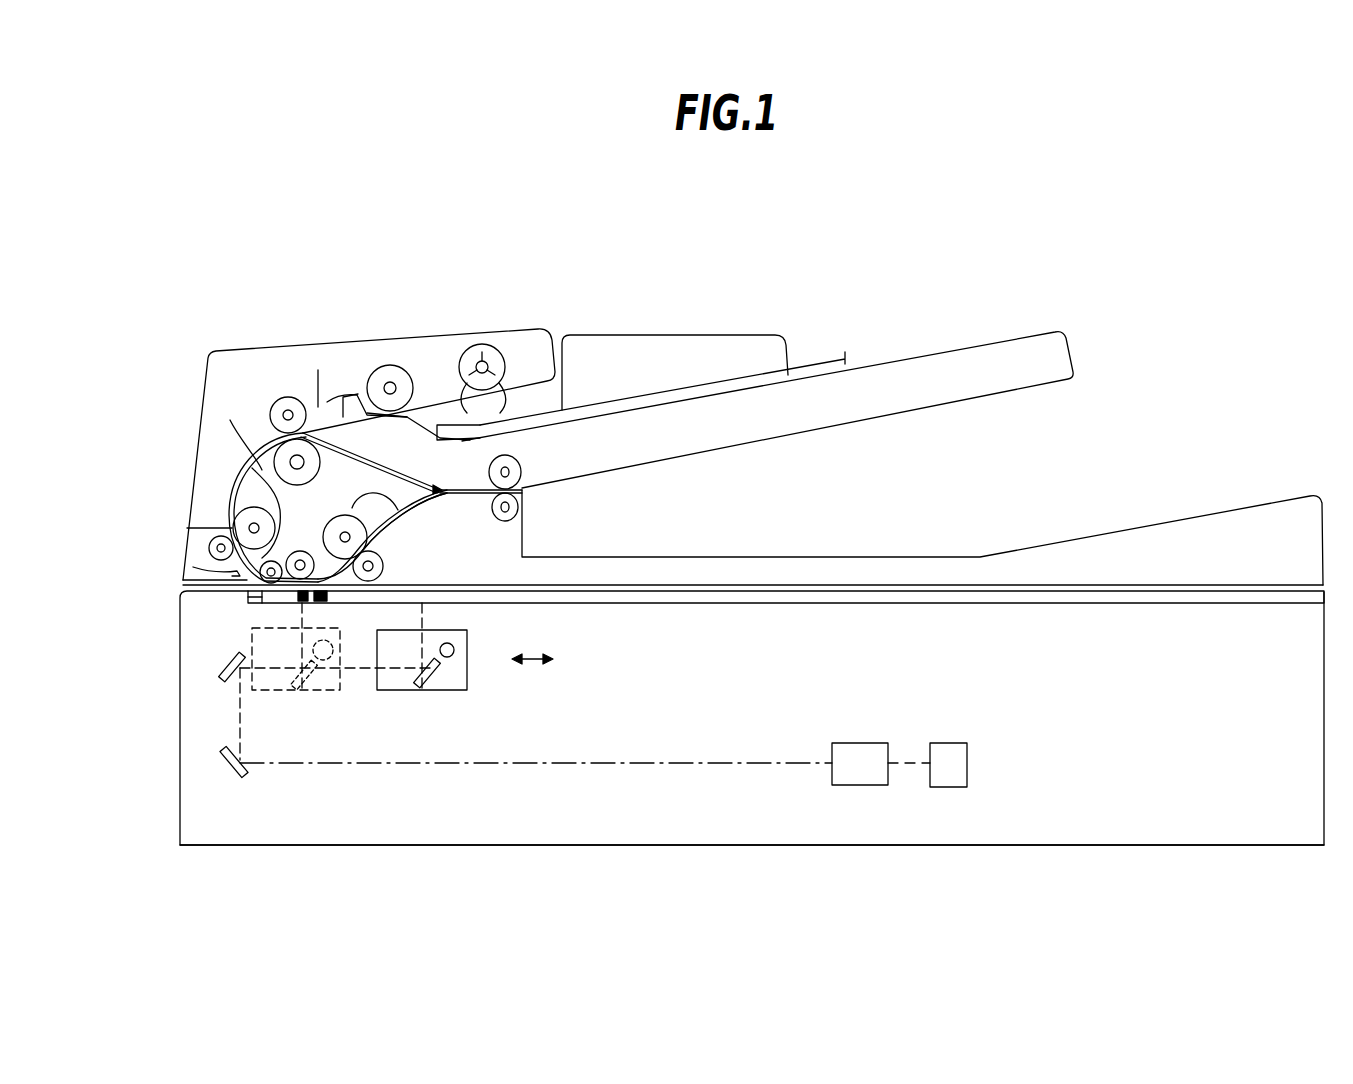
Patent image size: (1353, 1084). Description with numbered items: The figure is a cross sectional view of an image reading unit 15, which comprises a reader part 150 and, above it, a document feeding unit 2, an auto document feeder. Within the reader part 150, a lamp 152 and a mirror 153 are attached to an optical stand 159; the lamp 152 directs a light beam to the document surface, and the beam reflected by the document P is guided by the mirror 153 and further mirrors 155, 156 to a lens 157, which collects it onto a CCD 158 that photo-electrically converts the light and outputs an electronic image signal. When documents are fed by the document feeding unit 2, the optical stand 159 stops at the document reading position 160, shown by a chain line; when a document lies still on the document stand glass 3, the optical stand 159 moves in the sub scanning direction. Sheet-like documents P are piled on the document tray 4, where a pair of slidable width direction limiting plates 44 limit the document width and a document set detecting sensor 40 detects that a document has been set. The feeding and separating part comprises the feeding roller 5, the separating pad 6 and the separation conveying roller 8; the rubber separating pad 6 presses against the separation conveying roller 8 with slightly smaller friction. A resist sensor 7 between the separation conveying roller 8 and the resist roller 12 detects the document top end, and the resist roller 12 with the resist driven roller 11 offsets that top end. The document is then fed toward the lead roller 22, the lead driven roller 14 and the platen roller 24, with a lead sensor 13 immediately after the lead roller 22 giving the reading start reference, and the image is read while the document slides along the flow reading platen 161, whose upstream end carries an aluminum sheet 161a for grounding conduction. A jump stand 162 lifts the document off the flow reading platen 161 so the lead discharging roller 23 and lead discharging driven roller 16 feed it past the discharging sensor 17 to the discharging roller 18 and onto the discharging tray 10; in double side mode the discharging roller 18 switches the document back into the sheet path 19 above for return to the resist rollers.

The document feeding unit 2 is at (622, 300).
The document stand glass 3 is at (656, 595).
The document tray 4 is at (957, 363).
The feeding roller 5 is at (485, 352).
The separating pad 6 is at (395, 426).
The resist sensor 7 is at (322, 370).
The separation conveying roller 8 is at (393, 365).
The discharging tray 10 is at (797, 555).
The resist driven roller 11 is at (288, 397).
The resist roller 12 is at (322, 472).
The lead sensor 13 is at (187, 570).
The lead driven roller 14 is at (213, 530).
The image reading unit 15 is at (170, 805).
The lead discharging driven roller 16 is at (380, 558).
The discharging sensor 17 is at (455, 482).
The discharging roller 18 is at (518, 512).
The sheet path 19 is at (345, 395).
The lead roller 22 is at (247, 463).
The lead discharging roller 23 is at (380, 498).
The platen roller 24 is at (287, 545).
The document set detecting sensor 40 is at (442, 382).
The width direction limiting plates 44 is at (680, 347).
The document P is at (838, 358).
The reader part 150 is at (962, 825).
The lamp 152 is at (452, 645).
The mirror 153 is at (423, 692).
The mirror 155 is at (223, 680).
The mirror 156 is at (242, 778).
The lens 157 is at (857, 755).
The CCD 158 is at (943, 760).
The optical stand 159 is at (466, 680).
The document reading position 160 is at (322, 692).
The flow reading platen 161 is at (273, 597).
The aluminum sheet 161a is at (248, 593).
The jump stand 162 is at (322, 690).